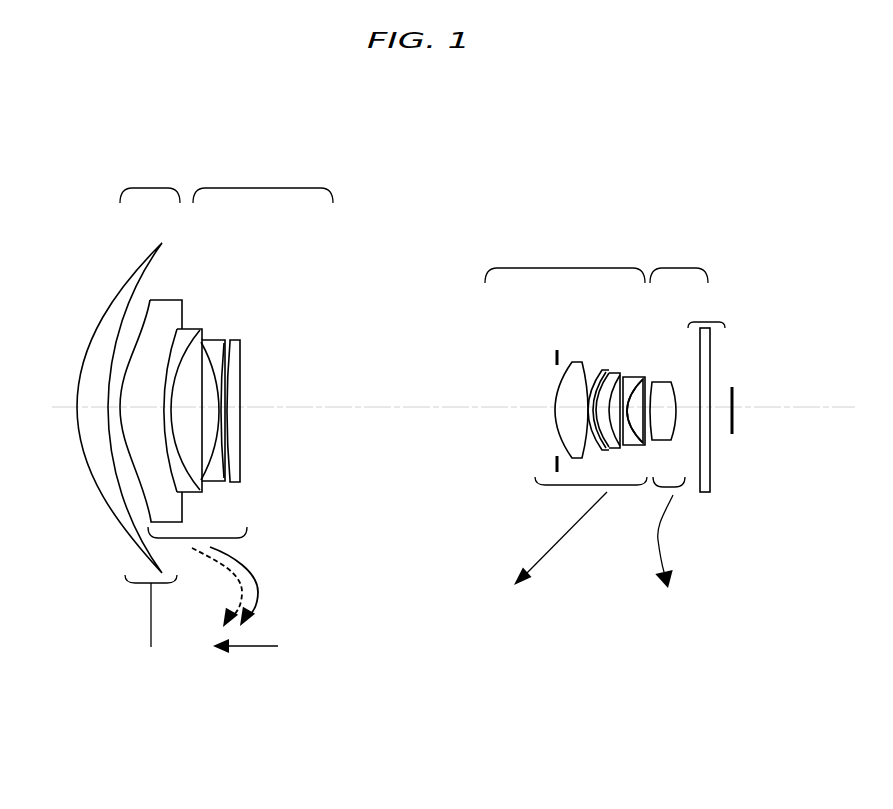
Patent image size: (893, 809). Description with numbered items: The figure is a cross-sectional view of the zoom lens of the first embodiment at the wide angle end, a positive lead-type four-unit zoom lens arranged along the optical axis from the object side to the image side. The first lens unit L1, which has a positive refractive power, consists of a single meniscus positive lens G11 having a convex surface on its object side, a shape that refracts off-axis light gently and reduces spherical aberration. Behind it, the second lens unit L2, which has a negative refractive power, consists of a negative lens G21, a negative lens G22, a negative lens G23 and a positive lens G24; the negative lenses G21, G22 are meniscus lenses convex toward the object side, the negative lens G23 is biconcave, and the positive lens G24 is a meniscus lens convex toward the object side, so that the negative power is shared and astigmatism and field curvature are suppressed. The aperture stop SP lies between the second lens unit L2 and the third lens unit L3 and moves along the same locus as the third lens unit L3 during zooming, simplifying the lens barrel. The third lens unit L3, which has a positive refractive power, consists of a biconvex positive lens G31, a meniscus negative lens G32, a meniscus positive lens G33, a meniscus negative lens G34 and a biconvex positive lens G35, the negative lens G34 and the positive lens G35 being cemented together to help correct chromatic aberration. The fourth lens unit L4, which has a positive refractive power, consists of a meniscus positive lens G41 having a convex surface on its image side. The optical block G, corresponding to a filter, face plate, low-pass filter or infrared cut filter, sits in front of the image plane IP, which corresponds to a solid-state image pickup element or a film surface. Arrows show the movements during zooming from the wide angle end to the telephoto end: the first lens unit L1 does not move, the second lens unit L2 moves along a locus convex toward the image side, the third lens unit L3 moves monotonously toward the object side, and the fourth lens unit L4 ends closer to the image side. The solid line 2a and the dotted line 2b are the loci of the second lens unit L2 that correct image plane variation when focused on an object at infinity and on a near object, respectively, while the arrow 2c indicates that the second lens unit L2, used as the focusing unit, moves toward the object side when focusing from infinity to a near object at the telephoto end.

The first lens unit L1 is at (150, 405).
The second lens unit L2 is at (240, 351).
The third lens unit L3 is at (566, 414).
The fourth lens unit L4 is at (679, 416).
The positive lens G11 is at (152, 248).
The negative lens G21 is at (163, 303).
The negative lens G22 is at (190, 335).
The negative lens G23 is at (217, 345).
The positive lens G24 is at (238, 340).
The positive lens G31 is at (565, 393).
The negative lens G32 is at (606, 368).
The positive lens G33 is at (615, 371).
The negative lens G34 is at (627, 376).
The positive lens G35 is at (640, 377).
The positive lens G41 is at (663, 382).
The optical block G is at (706, 395).
The image plane IP is at (735, 398).
The aperture stop SP is at (551, 461).
The solid line 2a is at (260, 577).
The dotted line 2b is at (235, 582).
The arrow 2c is at (257, 648).